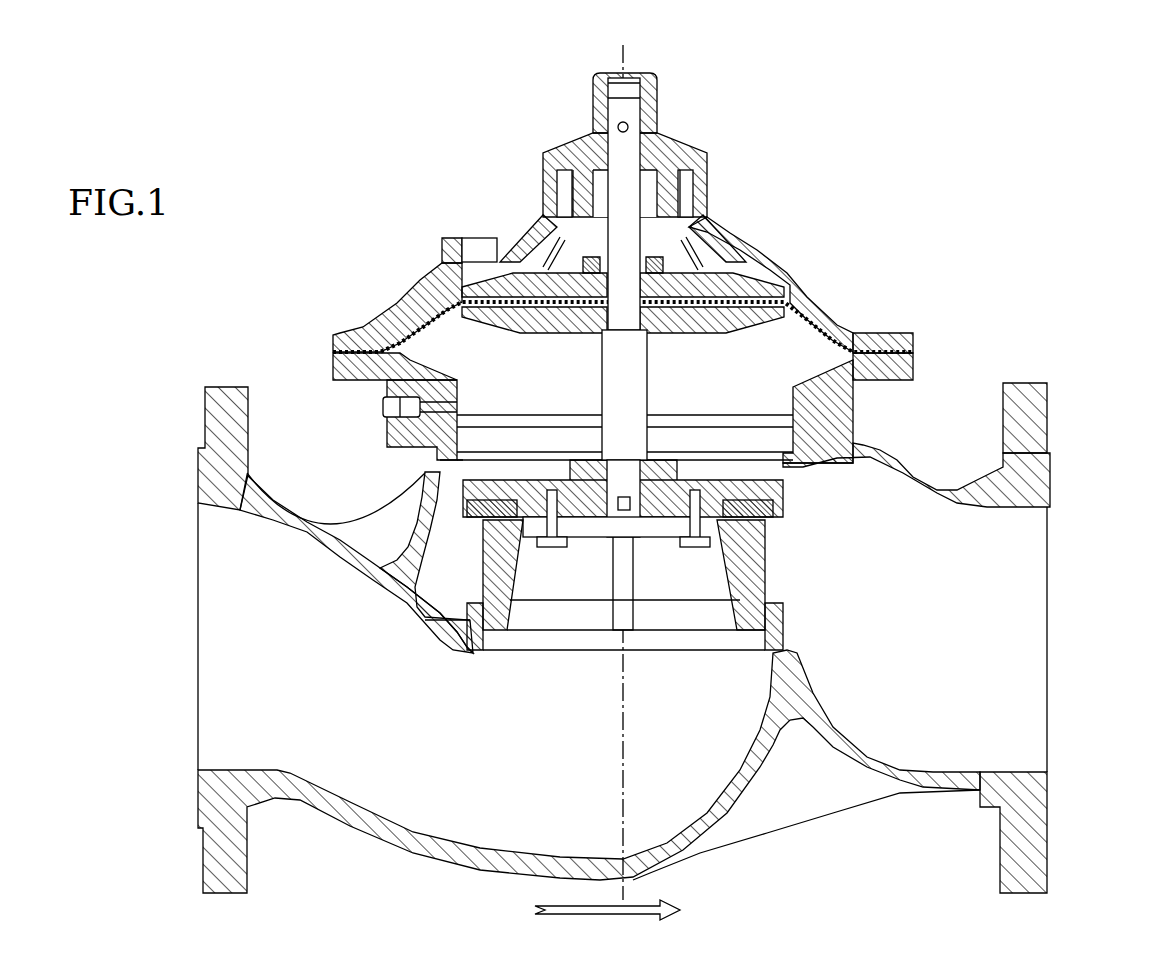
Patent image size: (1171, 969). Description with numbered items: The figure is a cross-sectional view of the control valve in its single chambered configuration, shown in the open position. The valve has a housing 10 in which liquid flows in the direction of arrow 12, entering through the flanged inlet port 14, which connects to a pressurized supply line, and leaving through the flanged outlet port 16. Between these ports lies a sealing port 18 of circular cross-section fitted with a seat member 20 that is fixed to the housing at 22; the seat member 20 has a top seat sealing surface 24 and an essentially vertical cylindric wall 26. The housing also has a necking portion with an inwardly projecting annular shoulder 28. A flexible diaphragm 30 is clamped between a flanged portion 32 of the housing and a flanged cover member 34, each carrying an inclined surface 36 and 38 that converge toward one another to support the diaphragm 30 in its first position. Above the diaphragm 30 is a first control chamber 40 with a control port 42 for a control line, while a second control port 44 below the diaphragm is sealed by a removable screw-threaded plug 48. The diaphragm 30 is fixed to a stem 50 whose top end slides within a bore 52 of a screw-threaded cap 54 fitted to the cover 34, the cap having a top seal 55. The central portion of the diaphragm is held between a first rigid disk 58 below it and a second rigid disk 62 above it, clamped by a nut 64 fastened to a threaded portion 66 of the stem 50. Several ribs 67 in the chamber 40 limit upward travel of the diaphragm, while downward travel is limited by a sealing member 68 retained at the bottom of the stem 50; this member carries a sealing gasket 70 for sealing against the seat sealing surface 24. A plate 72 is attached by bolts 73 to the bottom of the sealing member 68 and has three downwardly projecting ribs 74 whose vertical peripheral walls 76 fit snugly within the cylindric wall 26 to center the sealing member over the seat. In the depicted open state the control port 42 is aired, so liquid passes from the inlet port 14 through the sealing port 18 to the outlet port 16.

The housing 10 is at (985, 287).
The arrow 12 is at (535, 910).
The flanged inlet port 14 is at (197, 632).
The flanged outlet port 16 is at (1050, 632).
The sealing port 18 is at (531, 638).
The seat member 20 is at (777, 612).
The fixing location of seat member 22 is at (800, 643).
The top seat sealing surface 24 is at (770, 603).
The vertical cylindric wall 26 is at (750, 650).
The inwardly projecting annular shoulder 28 is at (477, 480).
The flexible diaphragm 30 is at (830, 296).
The flanged portion of the housing 32 is at (893, 381).
The flanged cover member 34 is at (790, 262).
The inclined surface of housing flange 36 is at (823, 368).
The inclined surface of cover member 38 is at (872, 332).
The first control chamber 40 is at (583, 237).
The control port 42 is at (452, 236).
The second control port 44 is at (437, 442).
The removable screw-threaded plug 48 is at (383, 407).
The stem 50 is at (623, 383).
The bore 52 is at (635, 78).
The screw-threaded cap 54 is at (670, 143).
The top seal 55 is at (620, 78).
The first rigid disk 58 is at (405, 338).
The second rigid disk 62 is at (455, 275).
The nut 64 is at (660, 255).
The threaded portion 66 is at (583, 163).
The ribs 67 is at (530, 240).
The sealing member 68 is at (865, 447).
The sealing gasket 70 is at (780, 522).
The plate 72 is at (603, 527).
The bolts 73 is at (697, 545).
The downwardly projecting ribs 74 is at (597, 620).
The vertical peripheral walls 76 is at (765, 538).